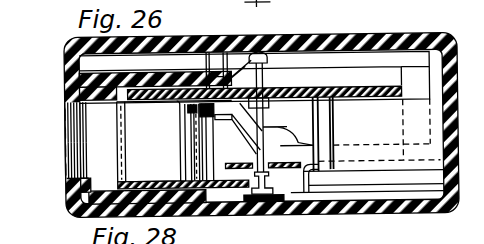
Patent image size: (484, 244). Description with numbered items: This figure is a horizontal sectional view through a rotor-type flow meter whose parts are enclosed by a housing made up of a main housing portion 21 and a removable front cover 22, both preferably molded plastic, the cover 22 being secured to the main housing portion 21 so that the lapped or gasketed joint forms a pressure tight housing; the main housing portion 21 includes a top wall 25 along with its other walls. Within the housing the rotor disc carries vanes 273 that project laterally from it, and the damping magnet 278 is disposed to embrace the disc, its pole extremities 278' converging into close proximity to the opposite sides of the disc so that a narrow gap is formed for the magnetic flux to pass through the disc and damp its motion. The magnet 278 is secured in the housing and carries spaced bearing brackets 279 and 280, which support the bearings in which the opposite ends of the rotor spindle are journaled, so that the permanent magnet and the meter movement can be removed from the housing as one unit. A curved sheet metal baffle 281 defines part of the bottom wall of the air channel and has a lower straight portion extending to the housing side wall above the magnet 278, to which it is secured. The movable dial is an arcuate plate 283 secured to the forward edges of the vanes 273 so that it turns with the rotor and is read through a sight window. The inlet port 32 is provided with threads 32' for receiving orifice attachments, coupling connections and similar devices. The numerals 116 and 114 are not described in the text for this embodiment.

The main housing portion 21 is at (64, 40).
The removable front cover 22 is at (70, 210).
The top wall 25 is at (257, 11).
The inlet port 32 is at (54, 140).
The threads 32' is at (56, 161).
The vanes 273 is at (151, 141).
The damping magnet 278 is at (254, 56).
The pole extremities 278' is at (223, 51).
The bearing bracket 279 is at (323, 38).
The bearing bracket 280 is at (315, 205).
The curved sheet metal baffle 281 is at (333, 128).
The arcuate plate 283 is at (183, 165).
The link 116 is at (265, 127).
The cross bar 114 is at (296, 144).